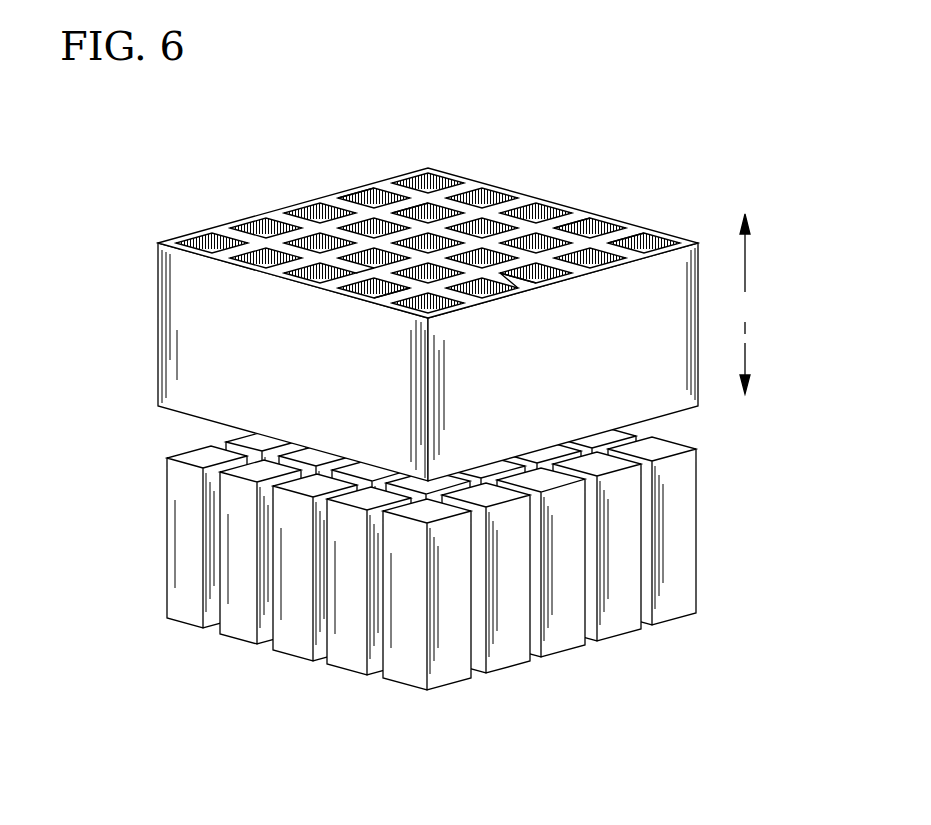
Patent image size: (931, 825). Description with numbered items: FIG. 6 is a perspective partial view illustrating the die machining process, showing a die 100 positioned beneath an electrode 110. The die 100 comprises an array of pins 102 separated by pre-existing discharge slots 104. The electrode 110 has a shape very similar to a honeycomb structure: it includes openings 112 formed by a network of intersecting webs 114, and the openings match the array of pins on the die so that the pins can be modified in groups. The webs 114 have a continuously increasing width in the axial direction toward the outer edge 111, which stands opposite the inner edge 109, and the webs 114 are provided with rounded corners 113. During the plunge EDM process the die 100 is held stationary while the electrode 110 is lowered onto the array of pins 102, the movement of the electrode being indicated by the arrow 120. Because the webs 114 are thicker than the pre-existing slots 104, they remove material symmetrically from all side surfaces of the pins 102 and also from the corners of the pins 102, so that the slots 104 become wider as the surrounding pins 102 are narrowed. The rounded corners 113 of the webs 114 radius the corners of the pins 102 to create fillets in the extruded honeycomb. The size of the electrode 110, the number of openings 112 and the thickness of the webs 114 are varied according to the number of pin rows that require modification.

The die 100 is at (439, 569).
The pins 102 is at (404, 666).
The discharge slots 104 is at (598, 435).
The inner edge 109 is at (194, 242).
The electrode 110 is at (362, 296).
The outer edge 111 is at (558, 203).
The openings 112 is at (255, 226).
The rounded corners 113 is at (362, 282).
The webs 114 is at (337, 212).
The arrow 120 is at (752, 258).